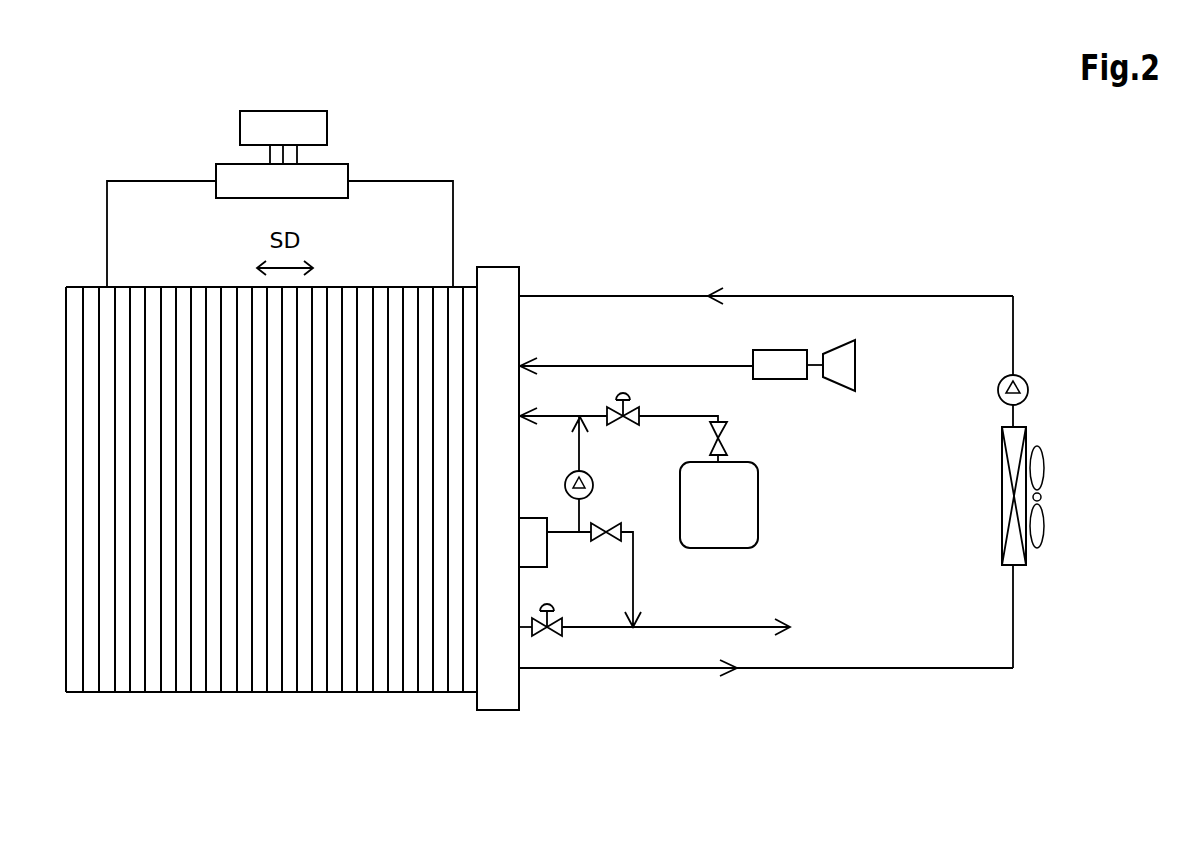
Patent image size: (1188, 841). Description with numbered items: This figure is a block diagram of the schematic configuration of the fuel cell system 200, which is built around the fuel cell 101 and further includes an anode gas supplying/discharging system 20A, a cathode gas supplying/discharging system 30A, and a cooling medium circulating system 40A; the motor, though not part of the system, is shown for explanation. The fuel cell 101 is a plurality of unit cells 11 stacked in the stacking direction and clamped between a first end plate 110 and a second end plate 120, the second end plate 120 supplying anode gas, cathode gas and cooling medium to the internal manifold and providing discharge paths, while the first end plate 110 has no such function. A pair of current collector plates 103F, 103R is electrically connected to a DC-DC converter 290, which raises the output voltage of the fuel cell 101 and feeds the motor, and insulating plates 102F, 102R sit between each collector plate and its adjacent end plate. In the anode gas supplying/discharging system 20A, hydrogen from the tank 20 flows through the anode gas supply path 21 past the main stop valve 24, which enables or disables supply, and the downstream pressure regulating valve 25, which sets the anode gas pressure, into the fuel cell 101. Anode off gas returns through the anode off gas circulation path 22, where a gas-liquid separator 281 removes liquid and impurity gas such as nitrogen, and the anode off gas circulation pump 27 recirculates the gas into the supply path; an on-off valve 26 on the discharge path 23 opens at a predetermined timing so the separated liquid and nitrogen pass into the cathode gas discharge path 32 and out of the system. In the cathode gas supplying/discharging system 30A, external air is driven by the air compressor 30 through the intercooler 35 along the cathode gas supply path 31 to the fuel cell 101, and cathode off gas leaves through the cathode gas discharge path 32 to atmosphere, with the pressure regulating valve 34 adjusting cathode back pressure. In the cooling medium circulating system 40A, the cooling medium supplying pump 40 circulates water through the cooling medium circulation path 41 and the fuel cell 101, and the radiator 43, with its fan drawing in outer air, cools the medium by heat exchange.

The fuel cell system 200 is at (812, 158).
The DC-DC converter 290 is at (340, 163).
The fuel cell 101 is at (367, 742).
The first end plate 110 is at (77, 694).
The insulating plate 102F is at (92, 694).
The current collector plate 103F is at (108, 694).
The unit cell 11 is at (257, 692).
The current collector plate 103R is at (453, 694).
The insulating plate 102R is at (463, 694).
The second end plate 120 is at (498, 712).
The cathode gas supplying/discharging system 30A is at (789, 401).
The cathode gas supply path 31 is at (641, 365).
The intercooler 35 is at (765, 349).
The air compressor 30 is at (833, 348).
The anode gas supplying/discharging system 20A is at (628, 467).
The anode gas supply path 21 is at (683, 415).
The pressure regulating valve 25 is at (612, 409).
The main stop valve 24 is at (729, 431).
The anode off gas circulation path 22 is at (580, 462).
The anode off gas circulation pump 27 is at (593, 486).
The tank 20 is at (719, 549).
The gas-liquid separator 281 is at (548, 560).
The on-off valve 26 is at (612, 541).
The discharge path 23 is at (634, 573).
The pressure regulating valve 34 is at (553, 638).
The cathode gas discharge path 32 is at (665, 629).
The cooling medium circulating system 40A is at (1037, 570).
The cooling medium circulation path 41 is at (1016, 356).
The cooling medium supplying pump 40 is at (998, 394).
The radiator 43 is at (1027, 438).